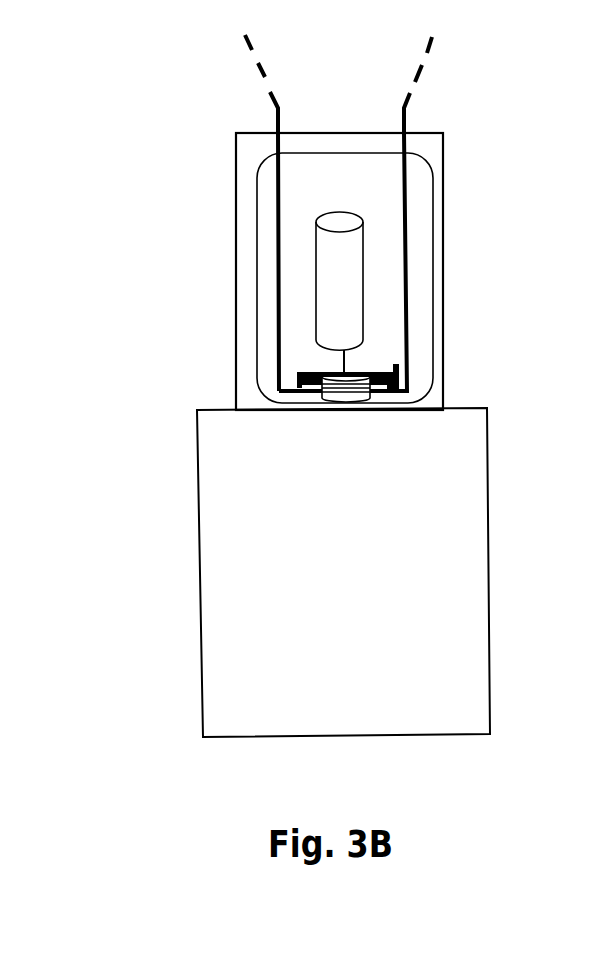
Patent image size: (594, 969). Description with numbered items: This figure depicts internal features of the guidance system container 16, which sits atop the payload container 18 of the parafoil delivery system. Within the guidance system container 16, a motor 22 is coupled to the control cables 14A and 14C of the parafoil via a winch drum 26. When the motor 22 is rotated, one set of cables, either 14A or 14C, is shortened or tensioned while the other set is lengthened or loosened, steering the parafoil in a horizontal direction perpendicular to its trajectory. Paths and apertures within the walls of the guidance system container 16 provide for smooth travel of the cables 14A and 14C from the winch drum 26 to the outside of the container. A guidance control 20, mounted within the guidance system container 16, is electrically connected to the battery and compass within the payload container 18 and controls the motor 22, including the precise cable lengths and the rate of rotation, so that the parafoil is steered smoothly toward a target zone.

The control cable 14A is at (441, 63).
The control cable 14C is at (237, 59).
The guidance system container 16 is at (225, 209).
The payload container 18 is at (188, 485).
The guidance control 20 is at (396, 363).
The motor 22 is at (374, 255).
The winch drum 26 is at (312, 396).